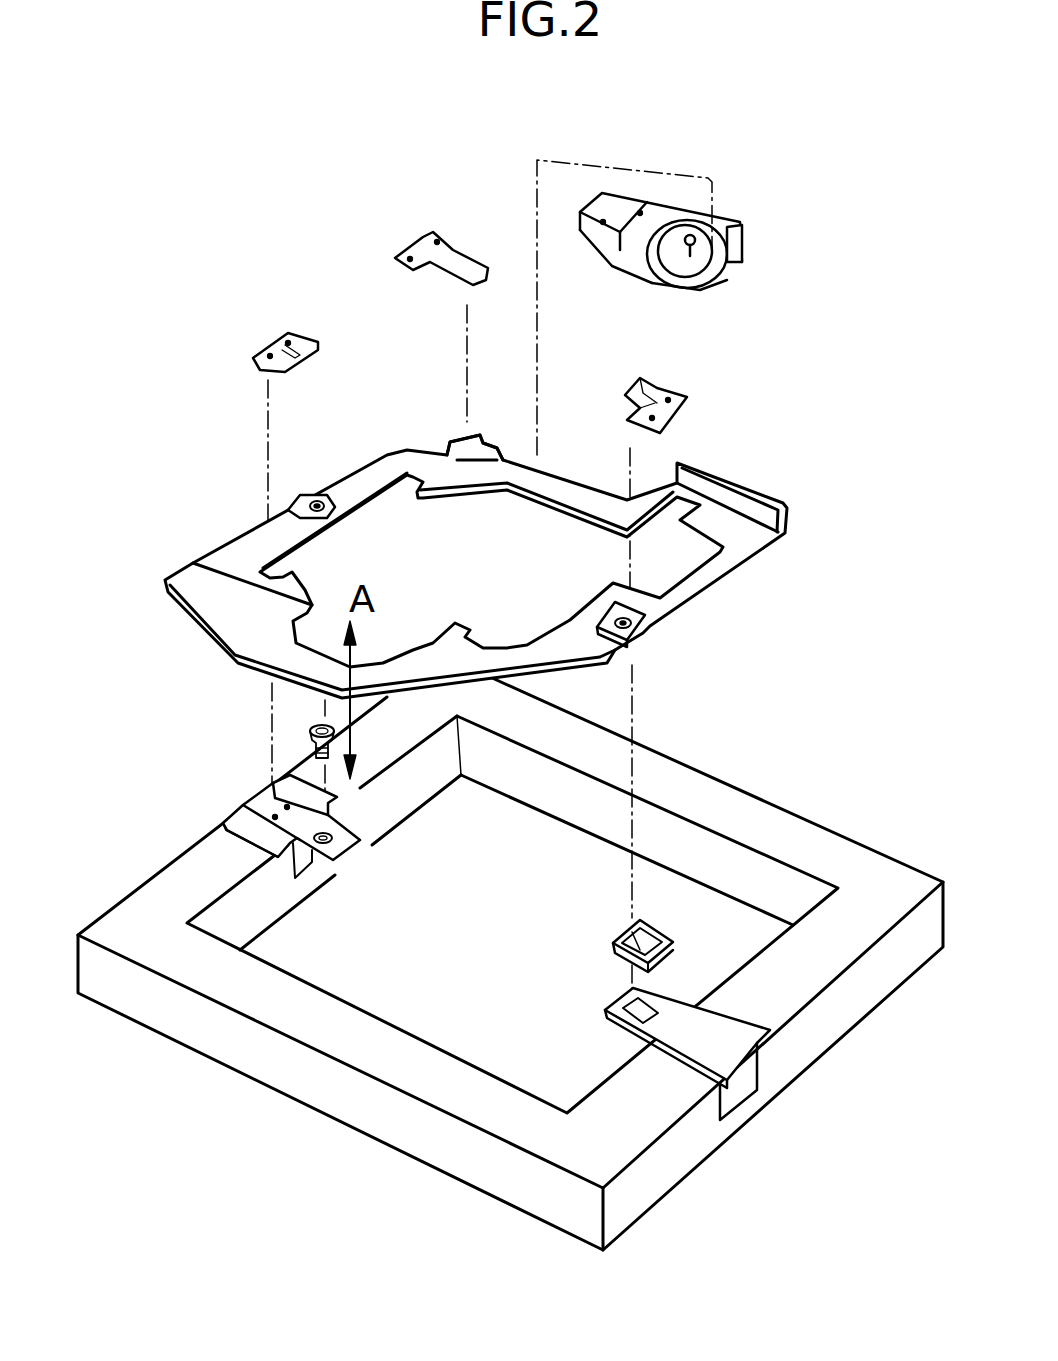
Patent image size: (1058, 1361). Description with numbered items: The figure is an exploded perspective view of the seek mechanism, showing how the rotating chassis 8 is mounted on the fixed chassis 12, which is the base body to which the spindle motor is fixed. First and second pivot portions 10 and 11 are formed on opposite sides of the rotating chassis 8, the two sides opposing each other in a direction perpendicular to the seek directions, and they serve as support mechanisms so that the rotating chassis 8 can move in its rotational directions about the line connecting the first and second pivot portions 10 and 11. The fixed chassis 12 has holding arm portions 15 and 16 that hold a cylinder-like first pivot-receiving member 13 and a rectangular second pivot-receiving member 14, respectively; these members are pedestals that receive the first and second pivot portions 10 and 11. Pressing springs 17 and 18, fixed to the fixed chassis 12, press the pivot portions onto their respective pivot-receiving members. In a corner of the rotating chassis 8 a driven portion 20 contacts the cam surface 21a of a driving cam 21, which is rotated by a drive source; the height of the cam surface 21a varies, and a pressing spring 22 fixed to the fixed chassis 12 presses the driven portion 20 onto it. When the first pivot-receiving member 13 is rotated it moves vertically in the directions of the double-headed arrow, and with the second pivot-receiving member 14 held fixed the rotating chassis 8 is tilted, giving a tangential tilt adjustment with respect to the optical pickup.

The rotating chassis 8 is at (527, 538).
The first pivot portion 10 is at (318, 500).
The second pivot portion 11 is at (645, 647).
The fixed chassis 12 is at (770, 812).
The first pivot-receiving member 13 is at (318, 758).
The second pivot-receiving member 14 is at (610, 937).
The holding arm portion 15 is at (362, 850).
The holding arm portion 16 is at (607, 1007).
The pressing spring 17 is at (265, 340).
The pressing spring 18 is at (690, 398).
The driven portion 20 is at (450, 438).
The driving cam 21 is at (709, 249).
The cam surface 21a is at (745, 232).
The pressing spring 22 is at (413, 246).